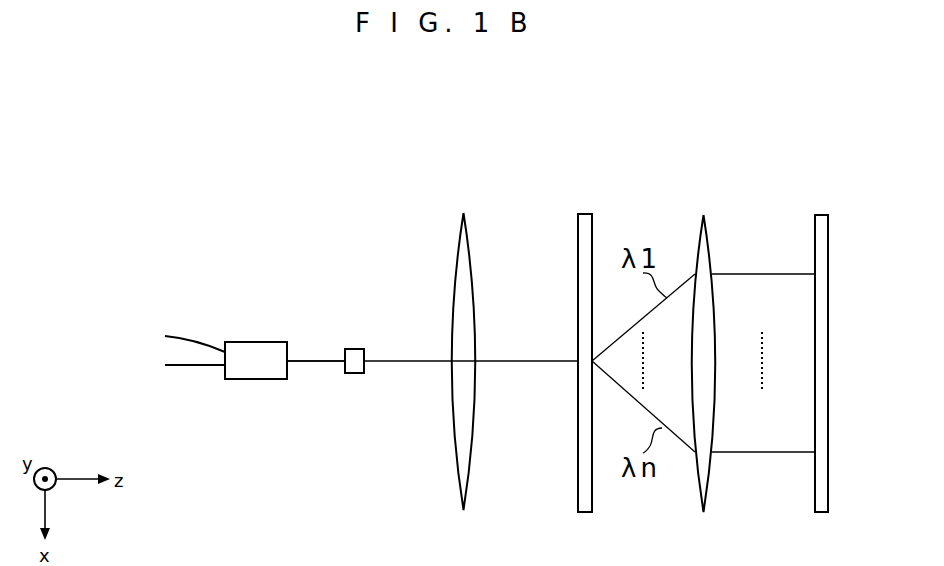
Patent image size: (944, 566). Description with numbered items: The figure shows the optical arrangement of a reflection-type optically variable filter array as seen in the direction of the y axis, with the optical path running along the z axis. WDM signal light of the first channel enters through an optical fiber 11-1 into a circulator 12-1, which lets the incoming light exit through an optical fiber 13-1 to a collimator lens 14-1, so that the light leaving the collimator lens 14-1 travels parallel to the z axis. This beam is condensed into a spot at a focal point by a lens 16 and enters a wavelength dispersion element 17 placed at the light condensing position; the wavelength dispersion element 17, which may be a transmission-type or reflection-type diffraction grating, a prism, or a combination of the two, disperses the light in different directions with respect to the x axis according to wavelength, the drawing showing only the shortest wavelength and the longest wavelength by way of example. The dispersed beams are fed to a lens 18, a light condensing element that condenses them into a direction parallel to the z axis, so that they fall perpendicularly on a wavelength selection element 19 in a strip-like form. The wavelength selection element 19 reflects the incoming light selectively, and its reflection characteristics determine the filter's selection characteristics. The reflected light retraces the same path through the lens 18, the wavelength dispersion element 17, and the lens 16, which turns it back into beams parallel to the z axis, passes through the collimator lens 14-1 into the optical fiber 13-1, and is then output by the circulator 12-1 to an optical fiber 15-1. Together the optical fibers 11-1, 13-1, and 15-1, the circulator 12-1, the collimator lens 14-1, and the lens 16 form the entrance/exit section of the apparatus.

The optical fiber 11-1 is at (196, 345).
The circulator 12-1 is at (250, 342).
The optical fiber 13-1 is at (311, 360).
The collimator lens 14-1 is at (364, 350).
The optical fiber 15-1 is at (196, 367).
The lens 16 is at (467, 230).
The wavelength dispersion element 17 is at (592, 228).
The lens 18 is at (707, 230).
The wavelength selection element 19 is at (828, 228).